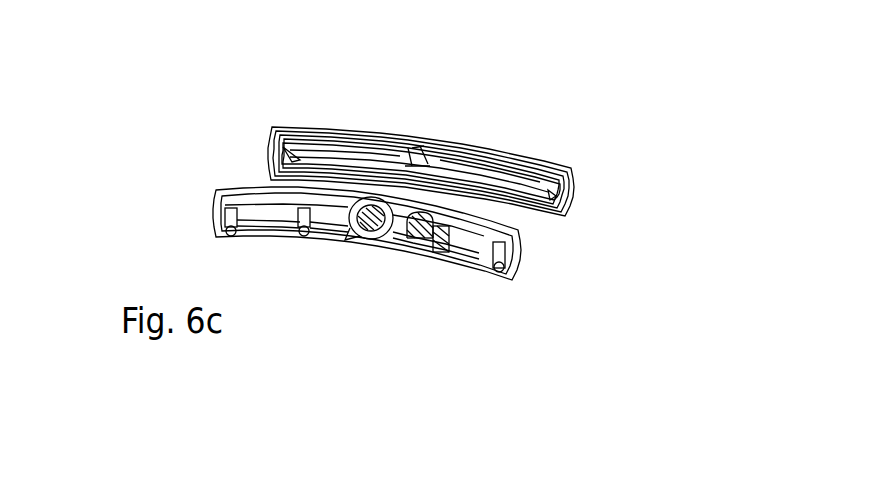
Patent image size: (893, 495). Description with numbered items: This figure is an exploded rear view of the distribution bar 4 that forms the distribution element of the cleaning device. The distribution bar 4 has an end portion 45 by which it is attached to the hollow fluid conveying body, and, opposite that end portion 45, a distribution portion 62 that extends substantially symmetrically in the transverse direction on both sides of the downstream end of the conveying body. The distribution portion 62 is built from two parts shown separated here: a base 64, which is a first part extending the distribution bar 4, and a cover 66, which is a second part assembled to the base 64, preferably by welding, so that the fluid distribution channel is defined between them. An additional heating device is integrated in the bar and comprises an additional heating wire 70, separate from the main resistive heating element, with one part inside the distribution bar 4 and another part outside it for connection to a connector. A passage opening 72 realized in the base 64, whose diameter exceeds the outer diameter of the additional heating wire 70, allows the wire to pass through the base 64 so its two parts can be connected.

The distribution bar 4 is at (499, 125).
The cover 66 is at (541, 145).
The distribution portion 62 is at (439, 275).
The base 64 is at (367, 275).
The end portion 45 is at (337, 245).
The additional heating wire 70 is at (399, 244).
The passage opening 72 is at (436, 250).